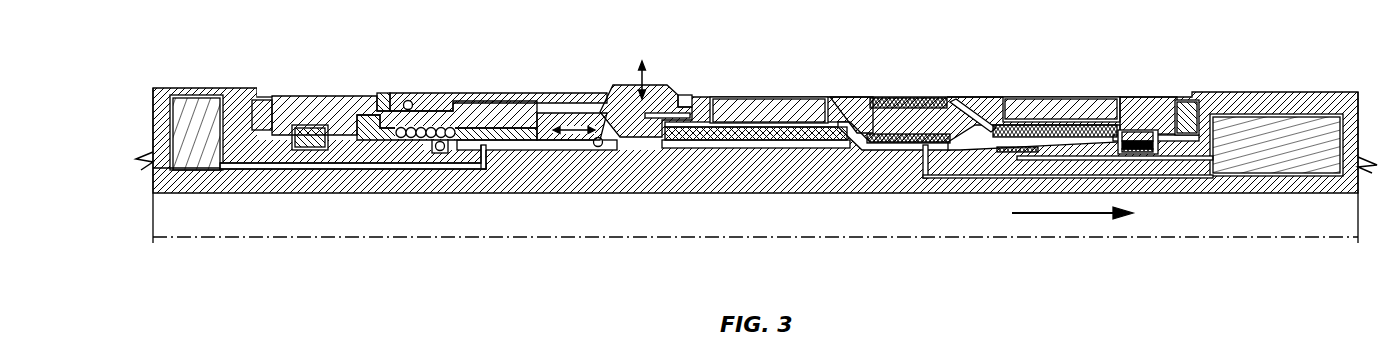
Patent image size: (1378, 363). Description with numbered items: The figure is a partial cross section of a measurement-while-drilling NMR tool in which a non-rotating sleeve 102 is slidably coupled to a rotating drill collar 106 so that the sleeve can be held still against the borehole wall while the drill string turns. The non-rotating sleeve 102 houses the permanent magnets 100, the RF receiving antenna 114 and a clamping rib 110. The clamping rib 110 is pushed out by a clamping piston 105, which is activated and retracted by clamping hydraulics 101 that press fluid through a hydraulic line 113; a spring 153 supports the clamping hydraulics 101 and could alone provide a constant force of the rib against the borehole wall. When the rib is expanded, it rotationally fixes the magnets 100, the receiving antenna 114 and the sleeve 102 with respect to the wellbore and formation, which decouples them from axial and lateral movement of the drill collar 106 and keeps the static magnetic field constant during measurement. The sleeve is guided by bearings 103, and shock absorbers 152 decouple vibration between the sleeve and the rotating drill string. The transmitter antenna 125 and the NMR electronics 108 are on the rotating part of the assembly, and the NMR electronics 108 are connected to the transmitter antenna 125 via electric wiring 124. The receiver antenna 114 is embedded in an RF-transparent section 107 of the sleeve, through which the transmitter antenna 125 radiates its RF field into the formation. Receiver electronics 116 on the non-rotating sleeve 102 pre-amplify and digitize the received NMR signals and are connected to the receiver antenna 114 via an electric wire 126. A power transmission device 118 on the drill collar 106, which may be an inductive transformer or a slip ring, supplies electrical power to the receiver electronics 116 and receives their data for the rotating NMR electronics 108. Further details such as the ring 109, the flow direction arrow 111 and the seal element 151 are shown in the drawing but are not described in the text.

The permanent magnets 100 is at (753, 100).
The clamping hydraulics 101 is at (210, 107).
The non-rotating sleeve 102 is at (837, 130).
The bearings 103 is at (263, 97).
The clamping piston 105 is at (538, 120).
The drill collar 106 is at (560, 180).
The RF-transparent section 107 is at (957, 97).
The NMR electronics 108 is at (1257, 123).
The retainer ring 109 is at (1145, 130).
The clamping rib 110 is at (628, 93).
The flow direction arrow 111 is at (1058, 215).
The hydraulic line 113 is at (340, 173).
The RF receiving antenna 114 is at (887, 105).
The receiver electronics 116 is at (1110, 98).
The power transmission device 118 is at (998, 148).
The electric wiring 124 is at (1173, 219).
The transmitter antenna 125 is at (892, 143).
The electric wire 126 is at (955, 100).
The seal element 151 is at (1141, 152).
The shock absorbers 152 is at (1135, 152).
The spring 153 is at (423, 126).